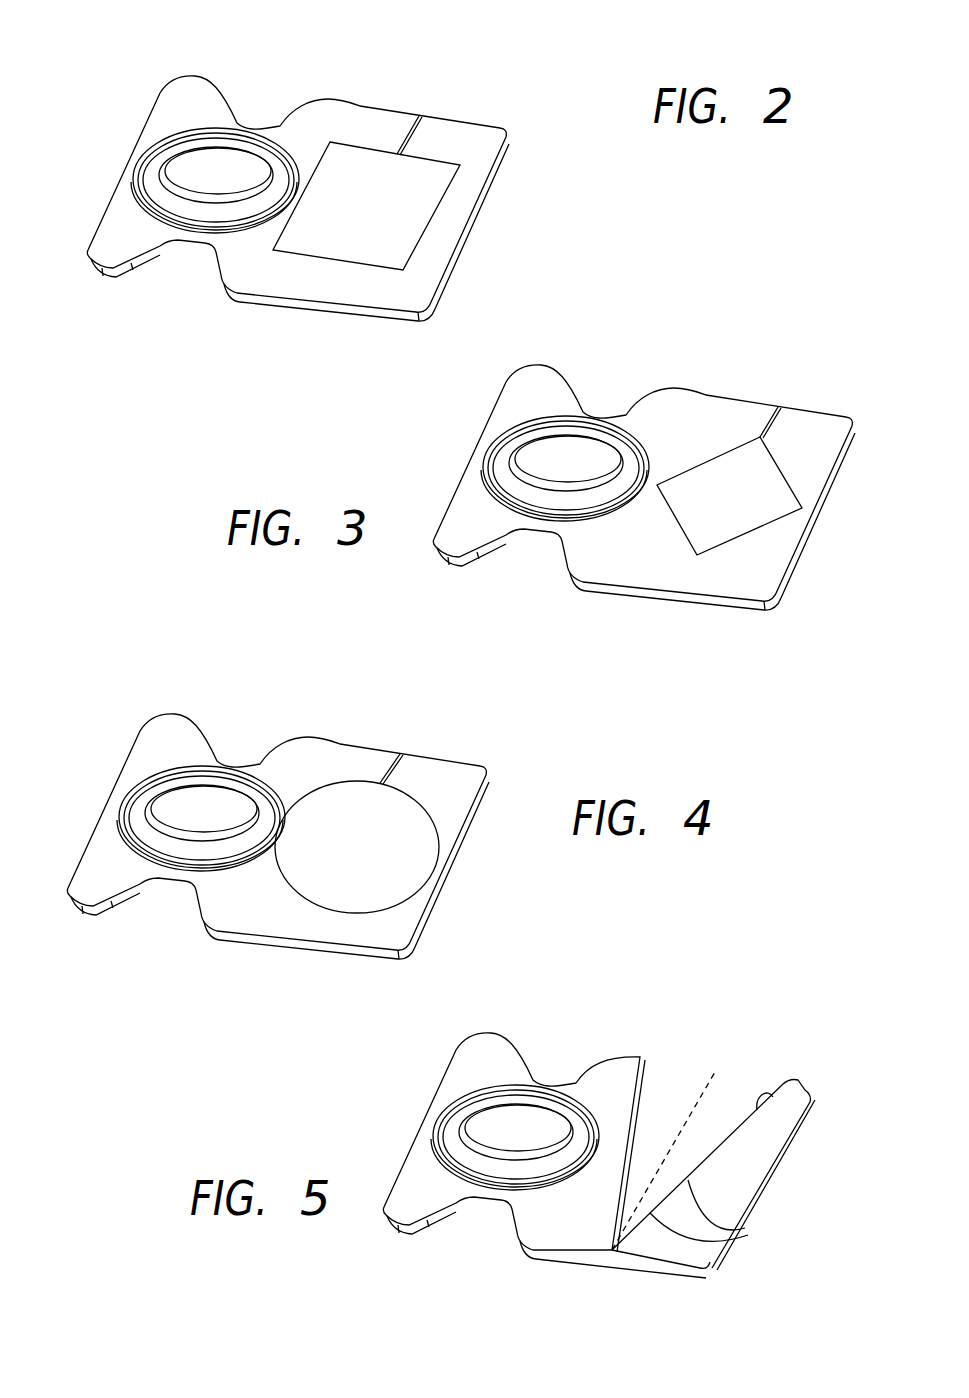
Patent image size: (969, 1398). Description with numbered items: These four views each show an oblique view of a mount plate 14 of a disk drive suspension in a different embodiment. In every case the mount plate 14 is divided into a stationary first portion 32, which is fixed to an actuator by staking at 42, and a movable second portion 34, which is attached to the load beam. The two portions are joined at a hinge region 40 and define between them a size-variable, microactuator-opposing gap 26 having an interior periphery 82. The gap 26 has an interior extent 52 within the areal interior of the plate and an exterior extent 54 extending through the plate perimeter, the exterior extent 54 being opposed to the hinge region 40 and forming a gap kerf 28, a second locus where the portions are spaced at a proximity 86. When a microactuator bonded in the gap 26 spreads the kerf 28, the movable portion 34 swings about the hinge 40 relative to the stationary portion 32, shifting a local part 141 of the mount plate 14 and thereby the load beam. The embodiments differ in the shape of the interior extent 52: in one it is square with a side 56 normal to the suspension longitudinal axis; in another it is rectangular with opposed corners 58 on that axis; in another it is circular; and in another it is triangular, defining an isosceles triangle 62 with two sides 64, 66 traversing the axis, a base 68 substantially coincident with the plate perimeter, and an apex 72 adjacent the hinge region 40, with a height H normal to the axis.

In FIG. 2, the mount plate 14 is at (200, 68).
In FIG. 3, the mount plate 14 is at (560, 362).
In FIG. 4, the mount plate 14 is at (187, 707).
In FIG. 5, the mount plate 14 is at (505, 1033).
In FIG. 2, the gap 26 is at (445, 200).
In FIG. 3, the gap 26 is at (775, 480).
In FIG. 4, the gap 26 is at (435, 808).
In FIG. 5, the gap 26 is at (787, 1125).
In FIG. 2, the gap kerf 28 is at (427, 127).
In FIG. 3, the gap kerf 28 is at (787, 417).
In FIG. 4, the gap kerf 28 is at (400, 760).
In FIG. 2, the stationary mount plate portion 32 is at (117, 225).
In FIG. 3, the stationary mount plate portion 32 is at (467, 512).
In FIG. 4, the stationary mount plate portion 32 is at (90, 880).
In FIG. 5, the stationary mount plate portion 32 is at (410, 1190).
In FIG. 2, the movable mount plate portion 34 is at (407, 290).
In FIG. 3, the movable mount plate portion 34 is at (753, 587).
In FIG. 4, the movable mount plate portion 34 is at (372, 932).
In FIG. 5, the movable mount plate portion 34 is at (757, 1160).
In FIG. 2, the hinge region 40 is at (333, 280).
In FIG. 3, the hinge region 40 is at (690, 573).
In FIG. 4, the hinge region 40 is at (308, 925).
In FIG. 5, the hinge region 40 is at (597, 1238).
In FIG. 2, the staking 42 is at (167, 170).
In FIG. 3, the staking 42 is at (510, 433).
In FIG. 4, the staking 42 is at (157, 788).
In FIG. 5, the staking 42 is at (458, 1120).
In FIG. 2, the gap interior extent 52 is at (405, 230).
In FIG. 3, the gap interior extent 52 is at (753, 518).
In FIG. 4, the gap interior extent 52 is at (393, 875).
In FIG. 2, the gap exterior extent 54 is at (420, 117).
In FIG. 3, the gap exterior extent 54 is at (780, 407).
In FIG. 4, the gap exterior extent 54 is at (397, 755).
In FIG. 5, the gap exterior extent 54 is at (753, 1090).
In FIG. 2, the side 56 is at (293, 215).
In FIG. 3, the opposed corners 58 is at (802, 510).
In FIG. 5, the isosceles triangle 62 is at (743, 1227).
In FIG. 5, the side 64 is at (623, 1147).
In FIG. 5, the side 66 is at (727, 1250).
In FIG. 5, the base 68 is at (673, 1087).
In FIG. 5, the apex 72 is at (608, 1250).
In FIG. 2, the interior periphery 82 is at (297, 255).
In FIG. 3, the interior periphery 82 is at (743, 445).
In FIG. 4, the interior periphery 82 is at (293, 893).
In FIG. 5, the interior periphery 82 is at (747, 1117).
In FIG. 2, the proximity 86 is at (410, 132).
In FIG. 3, the proximity 86 is at (763, 428).
In FIG. 4, the proximity 86 is at (385, 778).
In FIG. 2, the local part 141 is at (490, 160).
In FIG. 3, the local part 141 is at (843, 437).
In FIG. 4, the local part 141 is at (467, 790).
In FIG. 5, the local part 141 is at (800, 1095).